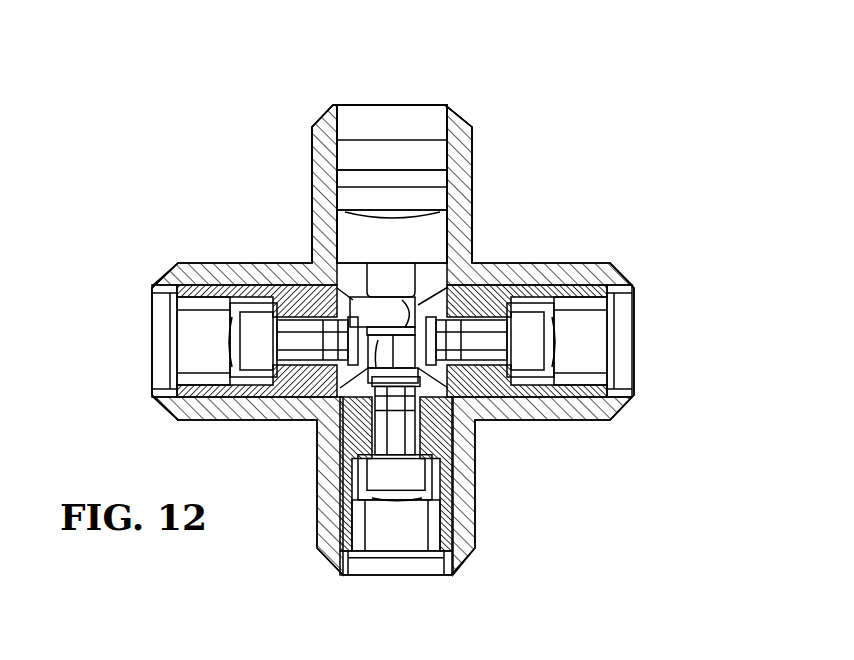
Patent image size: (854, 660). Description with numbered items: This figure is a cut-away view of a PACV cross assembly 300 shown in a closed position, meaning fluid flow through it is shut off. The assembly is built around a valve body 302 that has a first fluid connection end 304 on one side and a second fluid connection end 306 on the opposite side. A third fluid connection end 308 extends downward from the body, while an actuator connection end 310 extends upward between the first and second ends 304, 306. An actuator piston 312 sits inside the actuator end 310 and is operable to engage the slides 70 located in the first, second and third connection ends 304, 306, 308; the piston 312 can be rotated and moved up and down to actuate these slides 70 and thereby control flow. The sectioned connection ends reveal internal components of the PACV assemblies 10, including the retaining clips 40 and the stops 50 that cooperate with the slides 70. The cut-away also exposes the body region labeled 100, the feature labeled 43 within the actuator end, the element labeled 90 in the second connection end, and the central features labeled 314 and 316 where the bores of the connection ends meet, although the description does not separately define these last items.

The PACV cross assembly 300 is at (607, 100).
The cross fitting body 100 is at (470, 162).
The PACV assembly 10 is at (212, 268).
The retaining clip 40 is at (637, 380).
The bore 43 is at (415, 240).
The stop 50 is at (573, 337).
The slide 70 is at (532, 390).
The sleeve 90 is at (568, 290).
The valve body 302 is at (312, 200).
The first fluid connection end 304 is at (152, 348).
The second fluid connection end 306 is at (634, 345).
The third fluid connection end 308 is at (368, 170).
The actuator connection end 310 is at (467, 130).
The actuator piston 312 is at (445, 210).
The valve seat 314 is at (292, 276).
The central passage 316 is at (320, 405).